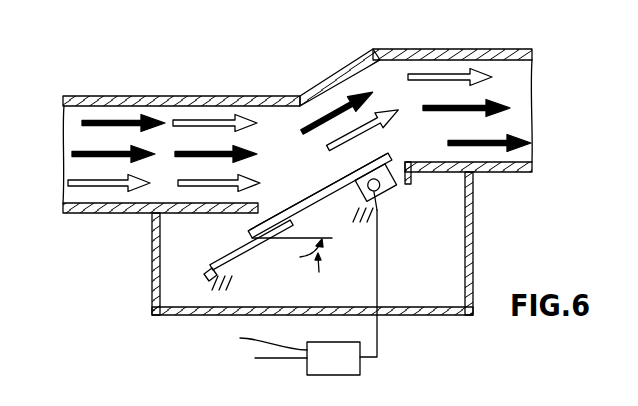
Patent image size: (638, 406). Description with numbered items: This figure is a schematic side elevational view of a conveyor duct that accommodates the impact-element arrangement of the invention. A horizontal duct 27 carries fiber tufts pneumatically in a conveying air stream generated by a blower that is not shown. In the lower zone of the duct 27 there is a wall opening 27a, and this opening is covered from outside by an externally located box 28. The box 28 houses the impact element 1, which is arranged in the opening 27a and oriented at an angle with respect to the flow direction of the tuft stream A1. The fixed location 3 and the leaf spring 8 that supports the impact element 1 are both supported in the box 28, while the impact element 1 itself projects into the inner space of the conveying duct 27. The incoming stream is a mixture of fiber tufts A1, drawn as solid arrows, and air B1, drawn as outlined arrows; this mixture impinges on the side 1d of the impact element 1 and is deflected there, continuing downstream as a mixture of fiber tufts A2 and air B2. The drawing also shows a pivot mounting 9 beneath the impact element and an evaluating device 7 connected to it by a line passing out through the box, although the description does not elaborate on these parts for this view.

The horizontal duct 27 is at (196, 96).
The wall opening 27a is at (276, 196).
The fiber tuft stream A1 is at (103, 119).
The air stream B1 is at (99, 187).
The deflected fiber tuft stream A2 is at (480, 147).
The deflected air stream B2 is at (432, 77).
The box 28 is at (423, 313).
The impact element 1 is at (333, 196).
The side of impact element 1d is at (316, 189).
The leaf spring 8 is at (246, 257).
The fixed location 3 is at (210, 268).
The pivot mounting 9 is at (390, 186).
The evaluating device 7 is at (358, 363).